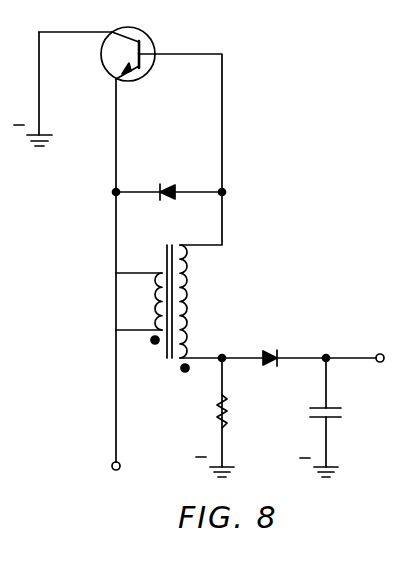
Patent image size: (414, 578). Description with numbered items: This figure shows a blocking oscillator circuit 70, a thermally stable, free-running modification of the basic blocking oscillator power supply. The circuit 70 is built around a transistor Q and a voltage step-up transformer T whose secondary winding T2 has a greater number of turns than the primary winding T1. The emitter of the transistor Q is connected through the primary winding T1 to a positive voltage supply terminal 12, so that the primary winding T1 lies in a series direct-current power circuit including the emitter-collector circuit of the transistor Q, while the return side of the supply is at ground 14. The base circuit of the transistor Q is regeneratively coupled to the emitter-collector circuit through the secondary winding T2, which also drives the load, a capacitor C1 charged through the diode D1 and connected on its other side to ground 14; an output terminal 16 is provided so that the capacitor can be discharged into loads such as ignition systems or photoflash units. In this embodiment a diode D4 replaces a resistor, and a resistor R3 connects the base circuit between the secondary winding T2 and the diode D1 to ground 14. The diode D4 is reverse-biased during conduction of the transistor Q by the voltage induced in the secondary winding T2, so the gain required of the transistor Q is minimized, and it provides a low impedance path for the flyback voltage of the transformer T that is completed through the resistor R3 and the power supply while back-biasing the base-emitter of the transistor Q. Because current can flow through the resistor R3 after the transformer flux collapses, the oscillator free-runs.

The blocking oscillator circuit 70 is at (267, 198).
The transistor Q is at (112, 79).
The ground 14 is at (38, 148).
The diode D4 is at (183, 168).
The voltage step-up transformer T is at (166, 255).
The primary winding T1 is at (153, 303).
The secondary winding T2 is at (188, 303).
The diode D1 is at (273, 367).
The output terminal 16 is at (401, 342).
The resistor R3 is at (217, 413).
The capacitor C1 is at (336, 418).
The positive voltage supply terminal 12 is at (119, 470).